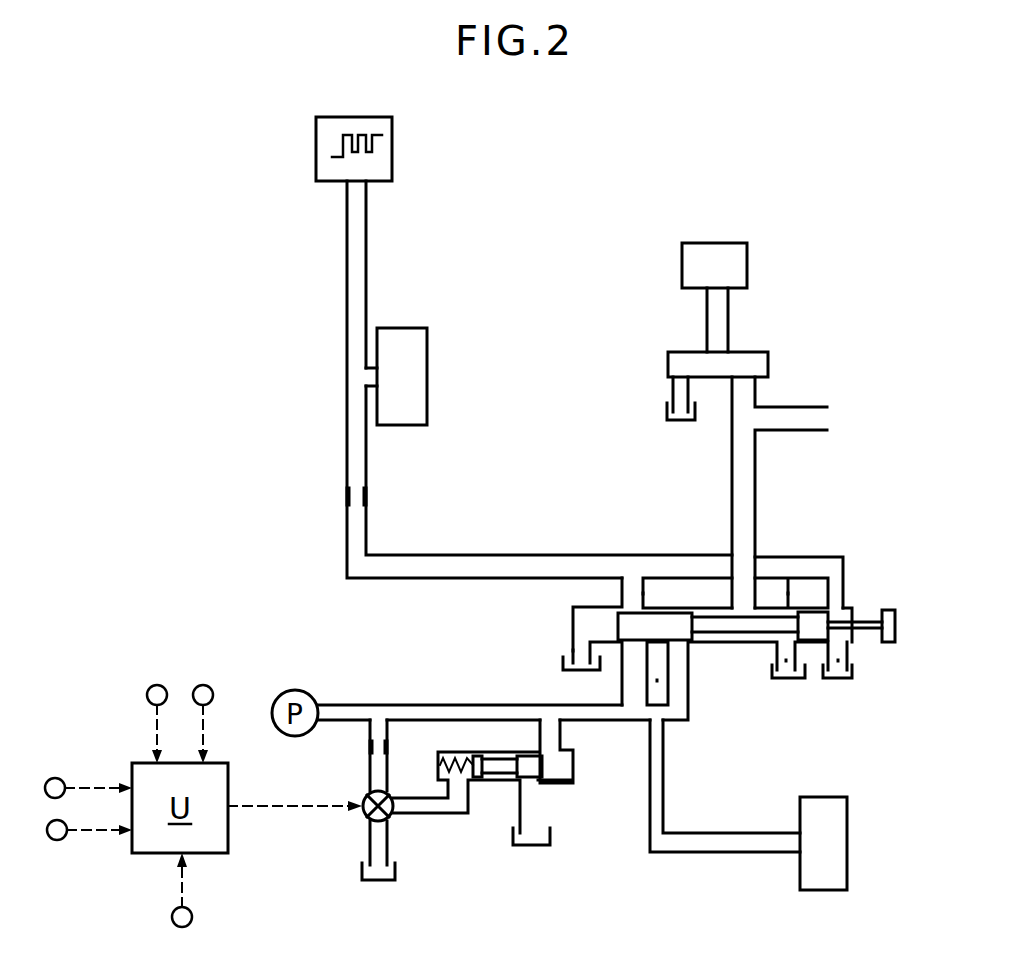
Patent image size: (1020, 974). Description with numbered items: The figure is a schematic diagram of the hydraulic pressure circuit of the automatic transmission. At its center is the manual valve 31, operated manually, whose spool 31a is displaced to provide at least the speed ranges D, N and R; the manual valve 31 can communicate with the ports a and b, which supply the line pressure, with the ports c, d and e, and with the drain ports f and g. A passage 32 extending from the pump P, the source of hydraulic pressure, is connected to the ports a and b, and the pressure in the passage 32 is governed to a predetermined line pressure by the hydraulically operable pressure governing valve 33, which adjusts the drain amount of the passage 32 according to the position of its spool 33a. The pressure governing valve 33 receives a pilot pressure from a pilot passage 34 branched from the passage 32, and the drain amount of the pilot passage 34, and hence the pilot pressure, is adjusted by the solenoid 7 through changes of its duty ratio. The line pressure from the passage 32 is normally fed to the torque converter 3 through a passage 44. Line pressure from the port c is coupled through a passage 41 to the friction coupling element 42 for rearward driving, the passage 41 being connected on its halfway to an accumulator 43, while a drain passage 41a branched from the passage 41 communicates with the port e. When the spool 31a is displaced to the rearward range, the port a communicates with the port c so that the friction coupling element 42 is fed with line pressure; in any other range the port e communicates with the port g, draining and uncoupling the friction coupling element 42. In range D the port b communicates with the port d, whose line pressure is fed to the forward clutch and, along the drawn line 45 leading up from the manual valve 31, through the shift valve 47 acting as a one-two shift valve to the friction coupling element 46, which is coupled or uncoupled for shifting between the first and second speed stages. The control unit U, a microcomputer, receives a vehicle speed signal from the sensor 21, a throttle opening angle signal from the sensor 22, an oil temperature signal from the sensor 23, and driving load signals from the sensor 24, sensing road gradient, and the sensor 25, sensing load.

The torque converter 3 is at (847, 836).
The solenoid 7 is at (363, 812).
The sensor 21 is at (159, 704).
The sensor 22 is at (209, 704).
The sensor 23 is at (192, 917).
The sensor 24 is at (72, 769).
The sensor 25 is at (64, 838).
The manual valve 31 is at (866, 590).
The spool 31a is at (683, 635).
The passage 32 is at (387, 705).
The pressure governing valve 33 is at (556, 794).
The spool 33a is at (513, 780).
The pilot passage 34 is at (370, 771).
The passage 41 is at (367, 579).
The drain passage 41a is at (802, 563).
The friction coupling element 42 is at (392, 148).
The accumulator 43 is at (427, 375).
The passage 44 is at (663, 782).
The connecting line 45 is at (732, 515).
The friction coupling element 46 is at (747, 272).
The shift valve 47 is at (744, 350).
The port a is at (630, 658).
The port b is at (673, 672).
The port c is at (632, 597).
The port d is at (740, 594).
The port e is at (847, 570).
The drain port f is at (782, 655).
The drain port g is at (840, 670).